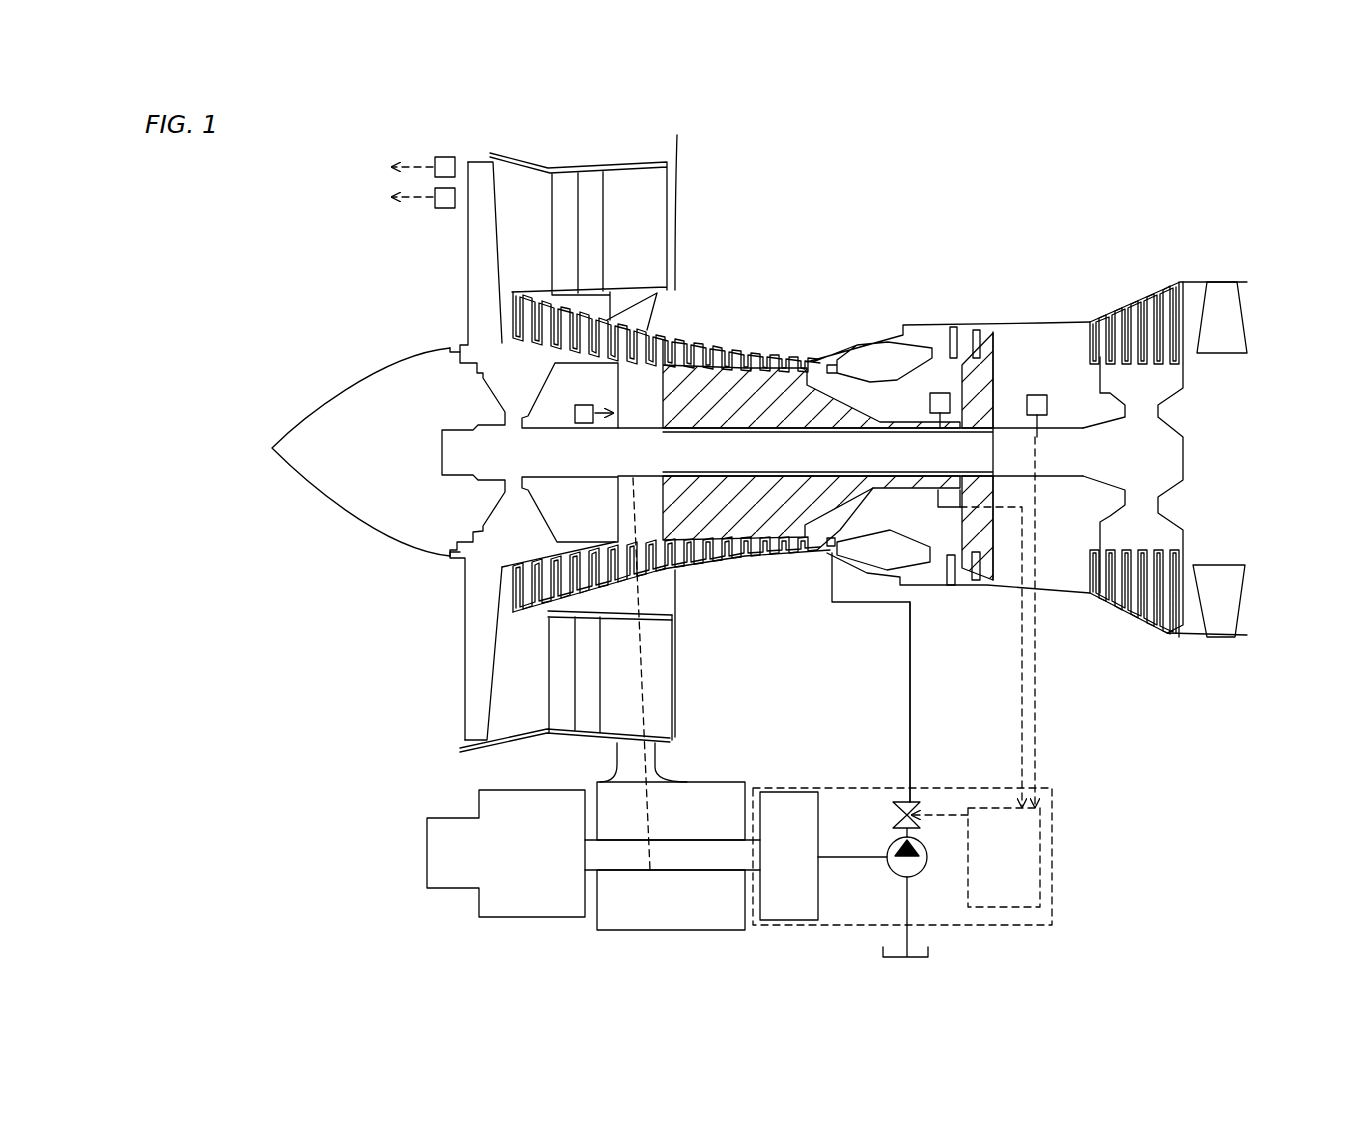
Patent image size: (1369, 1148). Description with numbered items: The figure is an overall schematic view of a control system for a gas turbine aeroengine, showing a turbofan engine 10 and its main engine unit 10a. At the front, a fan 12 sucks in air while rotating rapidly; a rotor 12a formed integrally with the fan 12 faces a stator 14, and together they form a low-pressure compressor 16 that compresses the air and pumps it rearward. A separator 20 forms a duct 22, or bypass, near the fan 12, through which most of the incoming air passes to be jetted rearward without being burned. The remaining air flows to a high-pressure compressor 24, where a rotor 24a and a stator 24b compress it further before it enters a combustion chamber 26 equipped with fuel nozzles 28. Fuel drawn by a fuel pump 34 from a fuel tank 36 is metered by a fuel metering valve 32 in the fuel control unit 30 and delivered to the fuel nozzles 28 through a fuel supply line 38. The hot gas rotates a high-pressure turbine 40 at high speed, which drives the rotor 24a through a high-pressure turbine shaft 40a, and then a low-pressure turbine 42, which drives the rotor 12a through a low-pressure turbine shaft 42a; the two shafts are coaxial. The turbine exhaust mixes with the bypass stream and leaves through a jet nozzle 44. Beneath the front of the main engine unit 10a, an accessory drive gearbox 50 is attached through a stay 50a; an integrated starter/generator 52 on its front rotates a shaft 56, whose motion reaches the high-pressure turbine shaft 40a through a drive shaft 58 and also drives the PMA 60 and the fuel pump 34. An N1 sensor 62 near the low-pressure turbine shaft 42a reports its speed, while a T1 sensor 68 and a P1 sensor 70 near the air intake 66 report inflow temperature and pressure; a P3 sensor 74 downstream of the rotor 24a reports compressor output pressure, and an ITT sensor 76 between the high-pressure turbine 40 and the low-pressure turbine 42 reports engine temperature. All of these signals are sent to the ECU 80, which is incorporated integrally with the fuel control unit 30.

The turbofan engine 10 is at (722, 247).
The main engine unit 10a is at (690, 643).
The fan 12 is at (477, 618).
The rotor 12a is at (560, 553).
The stator 14 is at (513, 610).
The low-pressure compressor 16 is at (627, 368).
The separator 20 is at (660, 293).
The duct 22 is at (652, 234).
The high-pressure compressor 24 is at (778, 552).
The rotor 24a is at (811, 384).
The stator 24b is at (742, 553).
The combustion chamber 26 is at (858, 352).
The fuel nozzles 28 is at (838, 533).
The fuel control unit (FCU) 30 is at (833, 788).
The fuel metering valve 32 is at (910, 805).
The fuel pump 34 is at (892, 845).
The fuel tank 36 is at (883, 953).
The fuel supply line 38 is at (907, 682).
The high-pressure turbine 40 is at (993, 370).
The high-pressure turbine shaft 40a is at (627, 477).
The low-pressure turbine 42 is at (1100, 393).
The low-pressure turbine shaft 42a is at (780, 467).
The jet nozzle 44 is at (1230, 407).
The accessory drive gearbox 50 is at (687, 780).
The stay 50a is at (615, 755).
The integrated starter/generator 52 is at (535, 871).
The shaft 56 is at (625, 873).
The drive shaft 58 is at (650, 812).
The PMA (permanent magnet alternator) 60 is at (805, 869).
The N1 sensor (speed sensor) 62 is at (575, 415).
The air intake 66 is at (460, 157).
The T1 sensor (temperature sensor) 68 is at (430, 157).
The P1 sensor (pressure sensor) 70 is at (443, 208).
The P3 sensor (pressure sensor) 74 is at (930, 403).
The ITT sensor (temperature sensor) 76 is at (1043, 395).
The ECU (electronic control unit) 80 is at (978, 807).